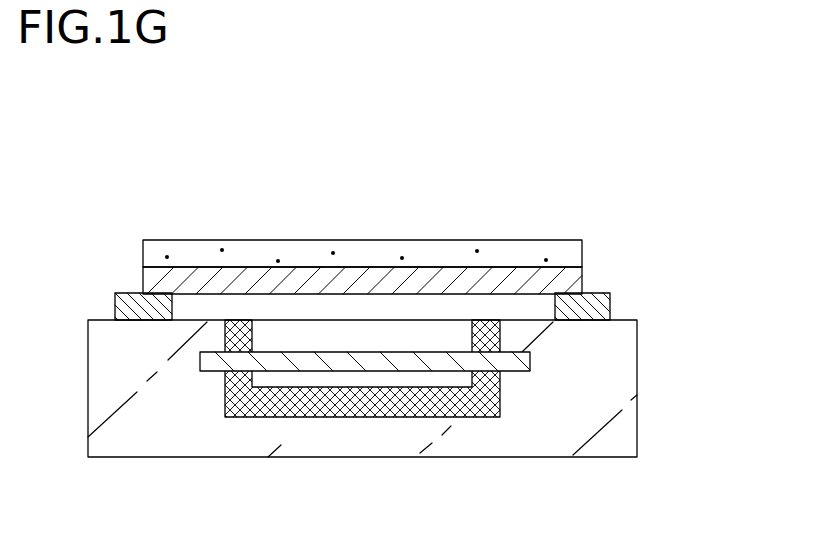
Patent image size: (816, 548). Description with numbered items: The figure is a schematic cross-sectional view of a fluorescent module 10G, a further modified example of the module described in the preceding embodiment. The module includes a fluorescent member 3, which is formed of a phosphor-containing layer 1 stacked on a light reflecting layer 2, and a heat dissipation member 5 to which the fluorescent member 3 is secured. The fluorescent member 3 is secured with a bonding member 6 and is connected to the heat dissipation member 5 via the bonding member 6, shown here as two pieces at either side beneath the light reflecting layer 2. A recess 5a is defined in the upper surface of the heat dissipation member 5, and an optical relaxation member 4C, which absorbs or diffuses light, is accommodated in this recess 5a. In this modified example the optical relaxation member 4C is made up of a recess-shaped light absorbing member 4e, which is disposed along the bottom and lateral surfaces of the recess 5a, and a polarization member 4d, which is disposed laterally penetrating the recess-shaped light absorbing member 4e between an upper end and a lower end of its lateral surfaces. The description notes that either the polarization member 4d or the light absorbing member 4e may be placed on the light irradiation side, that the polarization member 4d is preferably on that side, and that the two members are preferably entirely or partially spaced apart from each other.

The fluorescent module 10G is at (628, 247).
The heat dissipation member 5 is at (618, 375).
The recess 5a is at (473, 326).
The optical relaxation member 4C is at (197, 165).
The recess-shaped light absorbing member 4e is at (243, 400).
The polarization member 4d is at (303, 360).
The bonding member 6 is at (610, 305).
The fluorescent member 3 is at (362, 206).
The phosphor-containing layer 1 is at (420, 258).
The light reflecting layer 2 is at (485, 283).